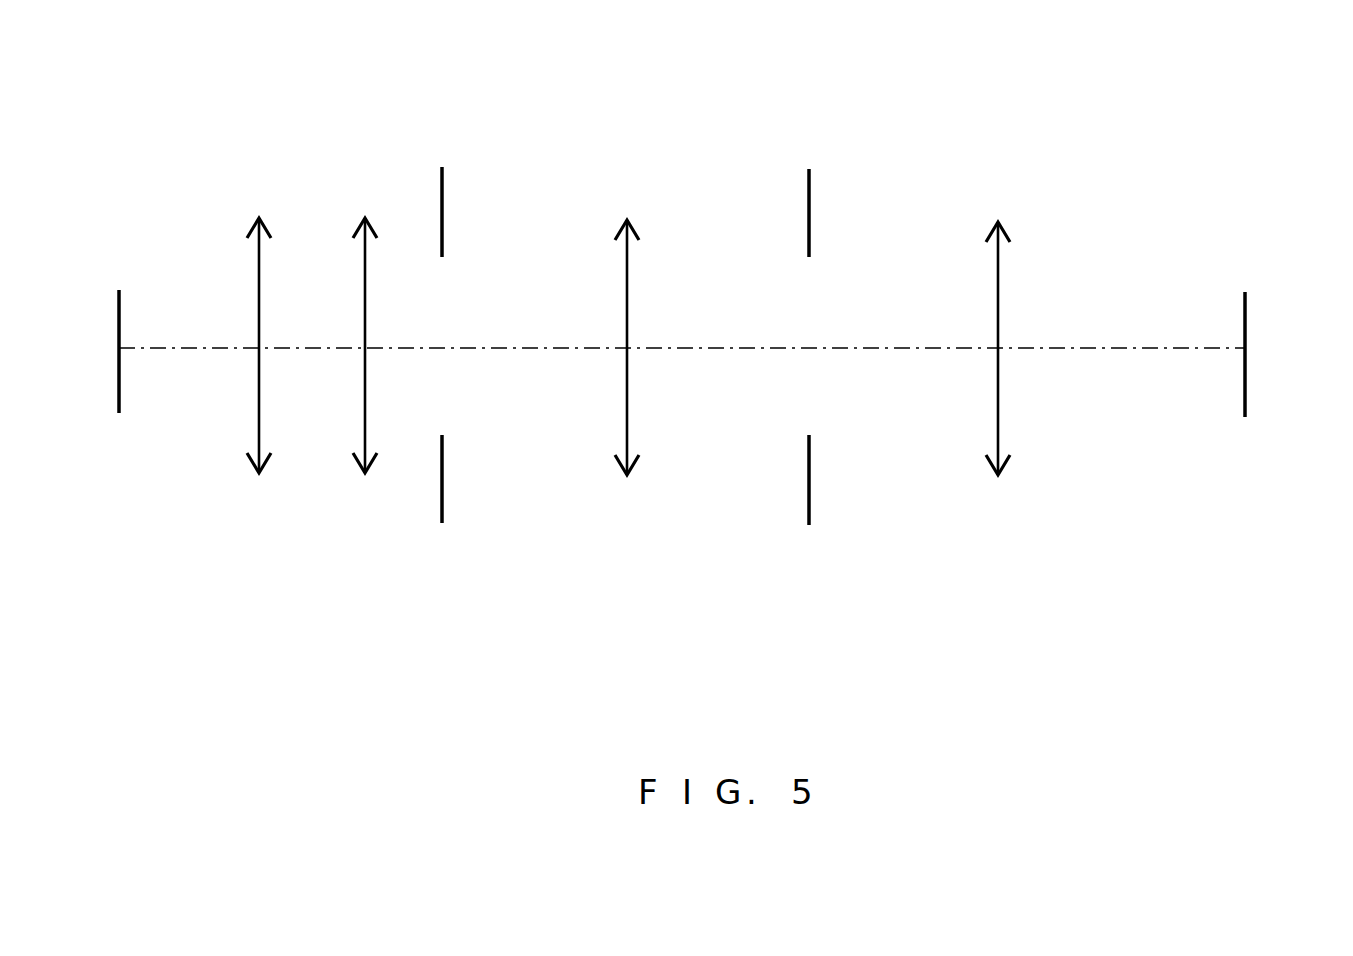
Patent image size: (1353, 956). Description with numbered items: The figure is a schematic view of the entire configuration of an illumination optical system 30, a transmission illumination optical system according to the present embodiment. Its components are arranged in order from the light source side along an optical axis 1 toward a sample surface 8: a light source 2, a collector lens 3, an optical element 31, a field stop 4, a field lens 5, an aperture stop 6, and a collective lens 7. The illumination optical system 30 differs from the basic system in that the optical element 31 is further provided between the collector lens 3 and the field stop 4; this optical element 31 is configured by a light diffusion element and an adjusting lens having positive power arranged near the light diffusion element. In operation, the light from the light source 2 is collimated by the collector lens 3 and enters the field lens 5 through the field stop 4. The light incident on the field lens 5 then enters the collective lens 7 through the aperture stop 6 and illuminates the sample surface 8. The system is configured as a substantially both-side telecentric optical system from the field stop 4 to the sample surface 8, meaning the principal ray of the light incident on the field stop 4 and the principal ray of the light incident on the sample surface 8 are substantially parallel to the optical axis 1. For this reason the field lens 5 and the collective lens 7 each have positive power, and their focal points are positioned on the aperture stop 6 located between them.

The optical axis 1 is at (169, 346).
The light source 2 is at (119, 345).
The collector lens 3 is at (259, 275).
The optical element 31 is at (365, 275).
The field stop 4 is at (442, 207).
The field lens 5 is at (627, 283).
The aperture stop 6 is at (809, 202).
The collective lens 7 is at (998, 285).
The sample surface 8 is at (1245, 320).
The illumination optical system 30 is at (1294, 178).